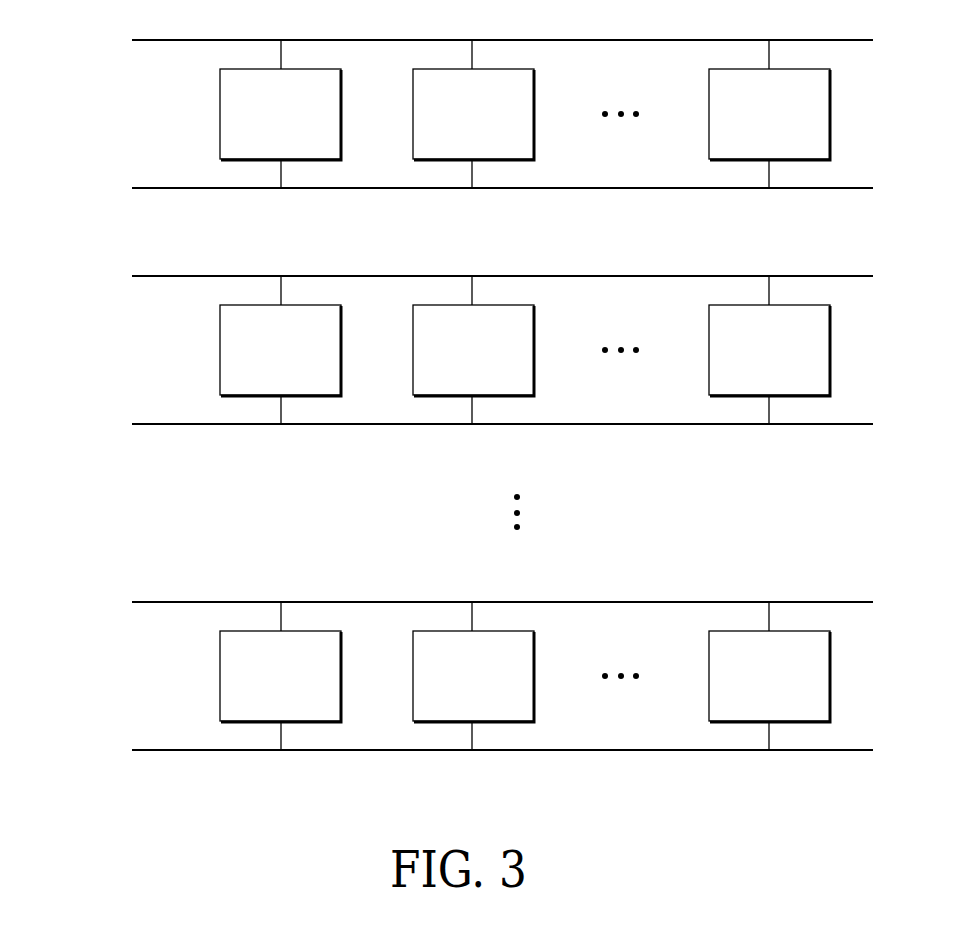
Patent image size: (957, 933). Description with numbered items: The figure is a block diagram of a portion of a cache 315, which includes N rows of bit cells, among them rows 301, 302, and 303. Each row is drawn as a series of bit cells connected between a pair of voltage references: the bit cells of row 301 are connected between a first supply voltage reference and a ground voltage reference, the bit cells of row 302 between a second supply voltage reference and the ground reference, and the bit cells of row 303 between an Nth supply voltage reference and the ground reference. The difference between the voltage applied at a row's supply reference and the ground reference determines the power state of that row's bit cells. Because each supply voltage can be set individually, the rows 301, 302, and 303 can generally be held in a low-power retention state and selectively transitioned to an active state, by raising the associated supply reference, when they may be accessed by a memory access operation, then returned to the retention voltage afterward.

The row of bit cells 301 is at (120, 114).
The row of bit cells 302 is at (120, 350).
The row of bit cells 303 is at (120, 676).
The cache 315 is at (653, 838).